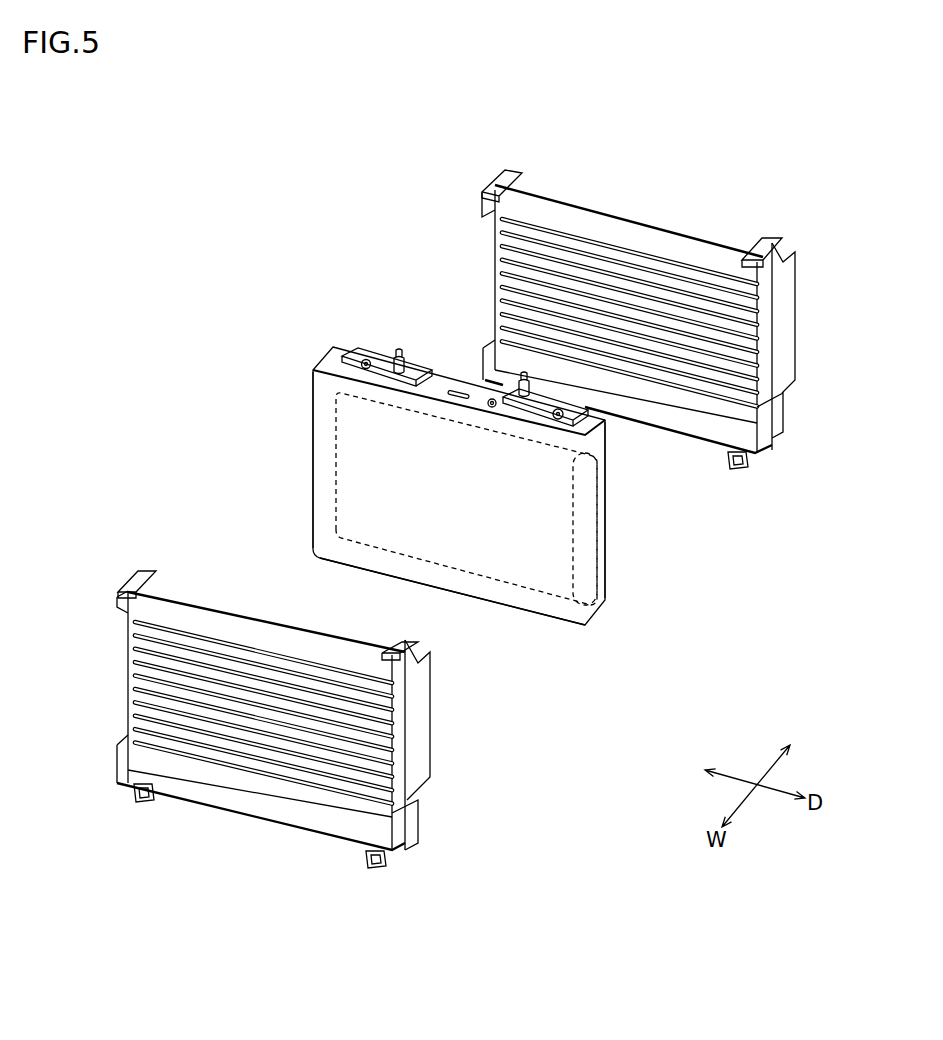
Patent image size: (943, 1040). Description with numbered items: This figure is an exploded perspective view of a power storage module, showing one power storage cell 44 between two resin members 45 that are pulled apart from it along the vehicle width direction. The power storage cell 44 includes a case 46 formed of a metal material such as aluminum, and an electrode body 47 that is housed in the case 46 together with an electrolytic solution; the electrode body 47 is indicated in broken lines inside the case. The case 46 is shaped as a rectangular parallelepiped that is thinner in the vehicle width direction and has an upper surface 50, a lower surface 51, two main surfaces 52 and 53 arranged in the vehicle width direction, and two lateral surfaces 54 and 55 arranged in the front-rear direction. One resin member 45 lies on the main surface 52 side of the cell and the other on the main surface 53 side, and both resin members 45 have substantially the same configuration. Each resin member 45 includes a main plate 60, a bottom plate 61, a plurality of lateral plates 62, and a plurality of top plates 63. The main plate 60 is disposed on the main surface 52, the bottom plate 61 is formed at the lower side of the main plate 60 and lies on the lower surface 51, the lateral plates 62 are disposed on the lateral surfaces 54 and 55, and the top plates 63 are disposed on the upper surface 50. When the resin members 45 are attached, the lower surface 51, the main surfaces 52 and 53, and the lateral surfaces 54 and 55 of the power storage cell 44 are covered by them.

The power storage cell 44 is at (451, 463).
The resin member 45 is at (432, 499).
The case 46 is at (341, 350).
The electrode body 47 is at (332, 504).
The upper surface 50 is at (437, 378).
The lower surface 51 is at (531, 614).
The main surface 52 is at (363, 537).
The main surface 53 is at (607, 503).
The lateral surface 54 is at (600, 559).
The lateral surface 55 is at (312, 432).
The main plate 60 is at (223, 620).
The bottom plate 61 is at (243, 808).
The lateral plate 62 is at (117, 600).
The top plate 63 is at (129, 584).